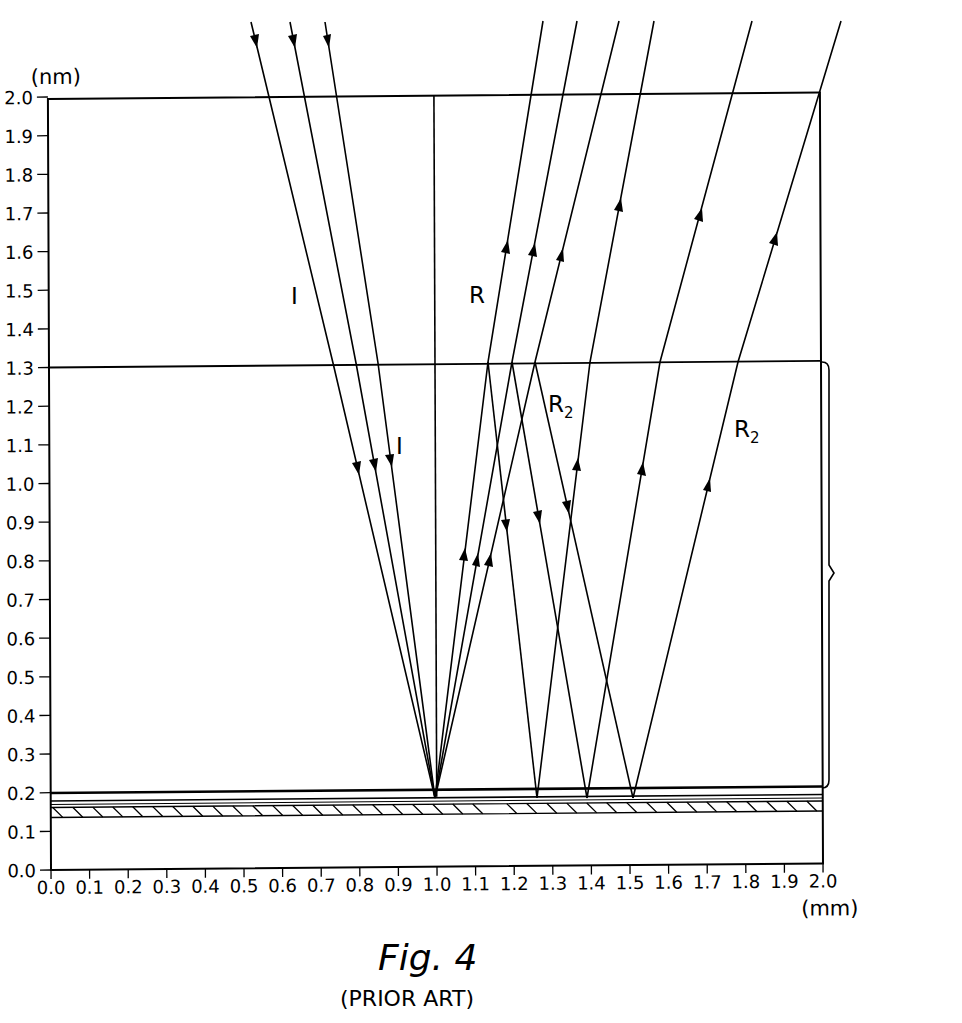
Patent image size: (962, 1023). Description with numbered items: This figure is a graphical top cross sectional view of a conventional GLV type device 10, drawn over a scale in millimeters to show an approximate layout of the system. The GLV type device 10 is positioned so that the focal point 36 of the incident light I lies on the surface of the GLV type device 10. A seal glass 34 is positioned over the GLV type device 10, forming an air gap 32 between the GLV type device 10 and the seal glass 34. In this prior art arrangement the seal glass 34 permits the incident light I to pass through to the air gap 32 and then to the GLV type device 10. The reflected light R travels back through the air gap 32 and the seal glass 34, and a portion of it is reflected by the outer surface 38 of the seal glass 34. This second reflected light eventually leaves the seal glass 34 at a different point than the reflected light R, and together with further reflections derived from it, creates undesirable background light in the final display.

The GLV type device 10 is at (488, 824).
The air gap 32 is at (190, 785).
The seal glass 34 is at (843, 575).
The focal point 36 is at (424, 795).
The outer surface 38 is at (785, 357).